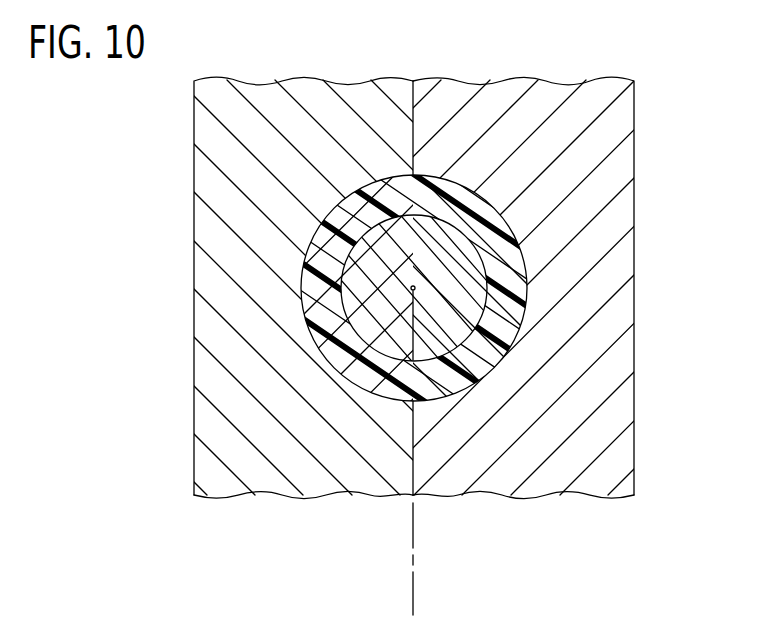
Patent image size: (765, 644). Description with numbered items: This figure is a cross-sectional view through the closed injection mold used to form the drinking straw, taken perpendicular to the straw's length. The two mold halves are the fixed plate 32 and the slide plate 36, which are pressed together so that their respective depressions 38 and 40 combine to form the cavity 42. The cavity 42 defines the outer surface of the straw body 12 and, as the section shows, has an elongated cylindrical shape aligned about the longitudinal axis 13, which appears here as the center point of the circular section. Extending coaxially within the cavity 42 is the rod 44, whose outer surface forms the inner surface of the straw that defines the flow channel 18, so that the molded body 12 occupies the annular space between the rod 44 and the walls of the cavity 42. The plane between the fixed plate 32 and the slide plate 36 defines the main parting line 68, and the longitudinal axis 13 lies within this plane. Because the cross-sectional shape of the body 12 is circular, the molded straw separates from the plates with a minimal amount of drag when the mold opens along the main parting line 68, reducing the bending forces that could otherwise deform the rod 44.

The slide plate 36 is at (218, 138).
The fixed plate 32 is at (610, 128).
The body 12 is at (328, 212).
The cavity 42 is at (491, 197).
The depression 38 is at (510, 336).
The depression 40 is at (335, 363).
The flow channel 18 is at (453, 232).
The rod 44 is at (465, 293).
The longitudinal axis 13 is at (411, 289).
The main parting line 68 is at (414, 558).